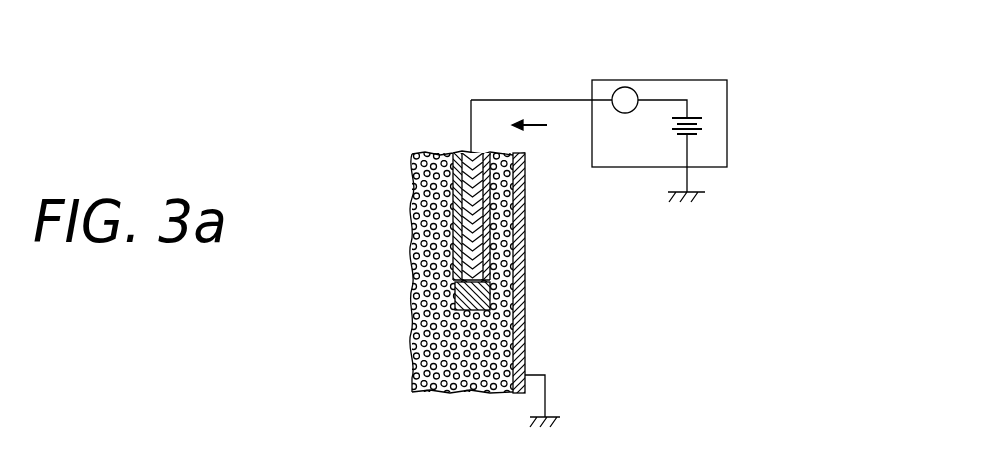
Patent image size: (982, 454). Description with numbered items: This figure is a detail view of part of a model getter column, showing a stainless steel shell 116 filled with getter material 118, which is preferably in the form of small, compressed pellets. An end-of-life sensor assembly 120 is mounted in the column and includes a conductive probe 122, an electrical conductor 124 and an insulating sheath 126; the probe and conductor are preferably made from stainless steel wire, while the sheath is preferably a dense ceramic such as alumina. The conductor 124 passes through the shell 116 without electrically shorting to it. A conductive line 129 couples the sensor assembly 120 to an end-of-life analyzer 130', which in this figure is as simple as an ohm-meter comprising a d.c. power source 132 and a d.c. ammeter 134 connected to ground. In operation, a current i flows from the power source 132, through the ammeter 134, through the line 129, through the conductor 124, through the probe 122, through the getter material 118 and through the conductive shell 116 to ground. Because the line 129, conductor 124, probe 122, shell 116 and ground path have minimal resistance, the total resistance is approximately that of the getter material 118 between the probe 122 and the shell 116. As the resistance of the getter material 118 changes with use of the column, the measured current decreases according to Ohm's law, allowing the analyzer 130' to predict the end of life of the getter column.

The stainless steel shell 116 is at (518, 347).
The getter material 118 is at (412, 352).
The end-of-life sensor assembly 120 is at (462, 151).
The conductive probe 122 is at (482, 297).
The electrical conductor 124 is at (472, 262).
The insulating sheath 126 is at (453, 193).
The conductive line 129 is at (507, 100).
The end-of-life analyzer 130' is at (709, 130).
The d.c. power source 132 is at (703, 123).
The d.c. ammeter 134 is at (636, 89).